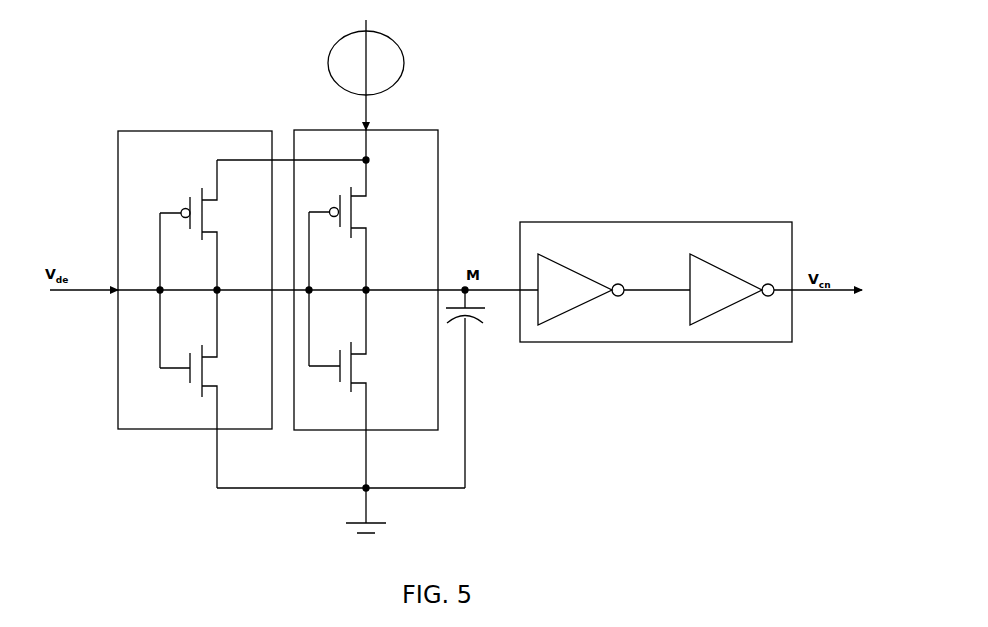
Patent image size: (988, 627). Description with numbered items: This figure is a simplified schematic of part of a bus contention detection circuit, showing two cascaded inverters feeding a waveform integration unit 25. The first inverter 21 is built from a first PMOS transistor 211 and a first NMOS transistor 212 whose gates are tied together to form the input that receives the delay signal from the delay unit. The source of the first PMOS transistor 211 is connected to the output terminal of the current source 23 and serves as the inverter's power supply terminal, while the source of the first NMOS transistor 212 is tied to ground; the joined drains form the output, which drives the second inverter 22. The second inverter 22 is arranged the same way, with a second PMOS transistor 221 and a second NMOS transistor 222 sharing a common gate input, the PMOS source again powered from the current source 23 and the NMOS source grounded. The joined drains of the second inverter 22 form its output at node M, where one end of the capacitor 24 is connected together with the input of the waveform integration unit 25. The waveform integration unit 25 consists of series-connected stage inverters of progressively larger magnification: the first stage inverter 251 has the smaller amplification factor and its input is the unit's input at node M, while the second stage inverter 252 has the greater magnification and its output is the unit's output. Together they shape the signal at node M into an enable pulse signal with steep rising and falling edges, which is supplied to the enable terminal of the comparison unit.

The first inverter 21 is at (162, 138).
The first PMOS transistor 211 is at (184, 198).
The first NMOS transistor 212 is at (173, 380).
The second inverter 22 is at (437, 152).
The second PMOS transistor 221 is at (383, 224).
The second NMOS transistor 222 is at (383, 368).
The current source 23 is at (402, 62).
The capacitor 24 is at (482, 324).
The waveform integration unit 25 is at (683, 222).
The first stage inverter 251 is at (590, 278).
The second stage inverter 252 is at (725, 273).